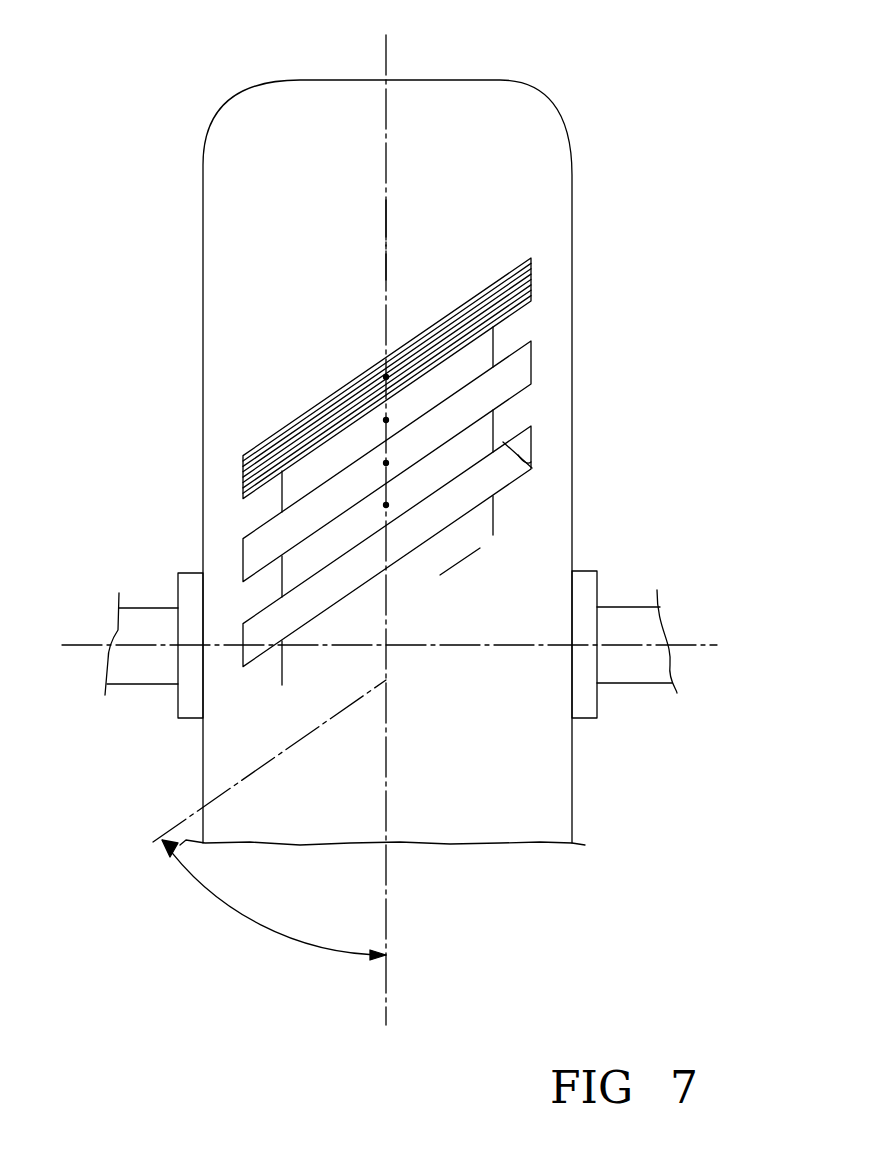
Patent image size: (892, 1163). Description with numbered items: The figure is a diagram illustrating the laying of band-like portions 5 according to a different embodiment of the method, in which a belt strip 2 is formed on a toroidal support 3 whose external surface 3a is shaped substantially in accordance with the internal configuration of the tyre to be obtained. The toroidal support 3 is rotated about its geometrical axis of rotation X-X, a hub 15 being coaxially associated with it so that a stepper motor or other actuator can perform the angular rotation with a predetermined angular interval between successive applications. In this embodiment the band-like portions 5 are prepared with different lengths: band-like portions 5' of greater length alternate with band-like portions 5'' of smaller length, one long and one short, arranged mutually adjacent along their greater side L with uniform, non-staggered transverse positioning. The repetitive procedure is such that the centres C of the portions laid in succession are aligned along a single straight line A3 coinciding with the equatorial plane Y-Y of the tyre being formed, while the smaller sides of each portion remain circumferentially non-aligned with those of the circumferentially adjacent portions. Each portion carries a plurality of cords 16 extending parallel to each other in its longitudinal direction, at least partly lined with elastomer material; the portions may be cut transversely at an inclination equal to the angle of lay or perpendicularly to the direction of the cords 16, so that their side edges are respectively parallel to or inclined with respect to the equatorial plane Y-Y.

The belt strip 2 is at (289, 553).
The toroidal support 3 is at (555, 210).
The external surface 3a is at (532, 770).
The band-like portion 5 is at (313, 454).
The band-like portion of greater length 5' is at (485, 538).
The band-like portion of smaller length 5'' is at (537, 590).
The hub 15 is at (590, 586).
The cords 16 is at (532, 277).
The straight line A3 is at (386, 243).
The centres C is at (396, 441).
The greater side L is at (462, 560).
The axis of rotation X is at (83, 645).
The equatorial plane Y is at (385, 53).